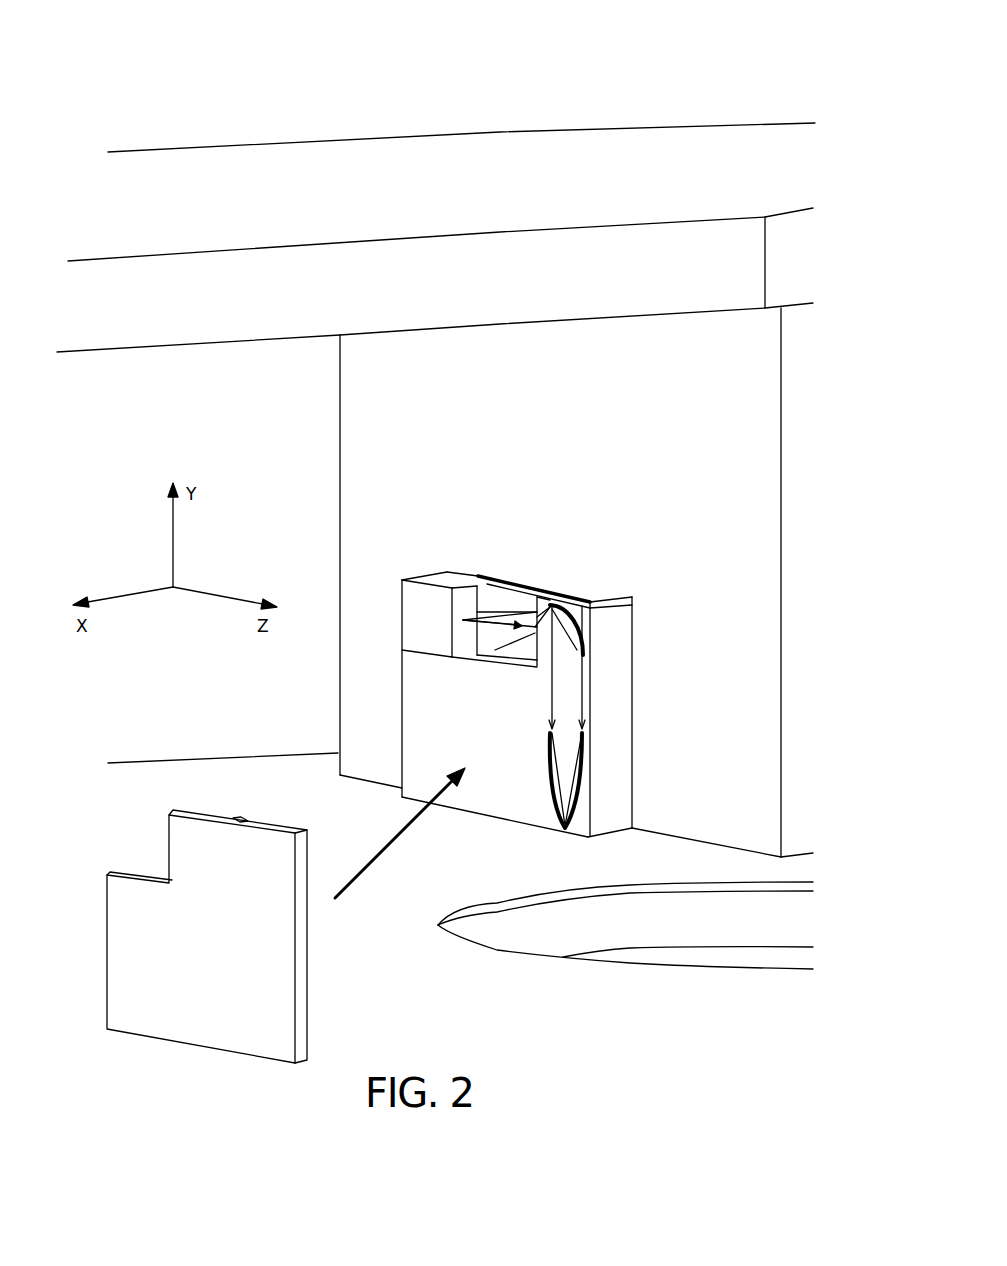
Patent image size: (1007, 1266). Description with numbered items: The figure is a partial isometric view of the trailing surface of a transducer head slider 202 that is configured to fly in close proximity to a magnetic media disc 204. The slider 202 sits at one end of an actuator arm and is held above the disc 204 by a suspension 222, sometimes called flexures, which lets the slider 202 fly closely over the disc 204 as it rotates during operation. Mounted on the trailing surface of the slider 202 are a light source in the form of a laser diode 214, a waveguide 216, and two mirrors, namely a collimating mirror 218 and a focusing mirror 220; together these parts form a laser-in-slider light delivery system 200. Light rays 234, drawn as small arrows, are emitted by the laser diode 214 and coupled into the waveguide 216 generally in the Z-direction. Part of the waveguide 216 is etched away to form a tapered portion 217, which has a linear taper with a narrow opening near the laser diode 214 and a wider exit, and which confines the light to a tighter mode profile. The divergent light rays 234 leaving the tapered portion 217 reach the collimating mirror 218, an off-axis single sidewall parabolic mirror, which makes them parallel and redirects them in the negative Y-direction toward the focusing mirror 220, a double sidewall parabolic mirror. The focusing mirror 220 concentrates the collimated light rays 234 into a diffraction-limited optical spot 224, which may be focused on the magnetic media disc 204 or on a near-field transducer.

The laser-in-slider light delivery system 200 is at (117, 72).
The transducer head slider 202 is at (573, 463).
The magnetic media disc 204 is at (158, 760).
The laser diode 214 is at (460, 570).
The waveguide 216 is at (582, 583).
The tapered portion 217 is at (490, 658).
The collimating mirror 218 is at (574, 631).
The focusing mirror 220 is at (550, 752).
The suspension 222 is at (444, 289).
The diffraction-limited optical spot 224 is at (563, 833).
The light rays 234 is at (578, 685).